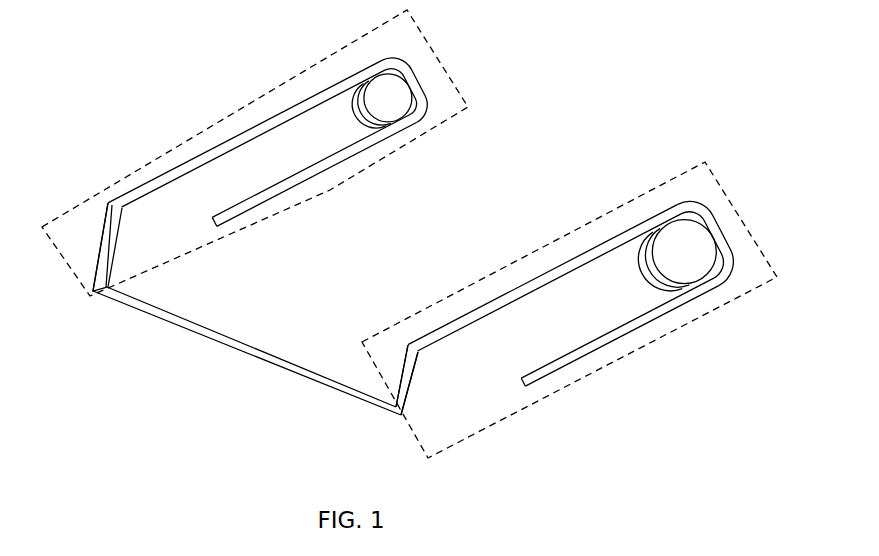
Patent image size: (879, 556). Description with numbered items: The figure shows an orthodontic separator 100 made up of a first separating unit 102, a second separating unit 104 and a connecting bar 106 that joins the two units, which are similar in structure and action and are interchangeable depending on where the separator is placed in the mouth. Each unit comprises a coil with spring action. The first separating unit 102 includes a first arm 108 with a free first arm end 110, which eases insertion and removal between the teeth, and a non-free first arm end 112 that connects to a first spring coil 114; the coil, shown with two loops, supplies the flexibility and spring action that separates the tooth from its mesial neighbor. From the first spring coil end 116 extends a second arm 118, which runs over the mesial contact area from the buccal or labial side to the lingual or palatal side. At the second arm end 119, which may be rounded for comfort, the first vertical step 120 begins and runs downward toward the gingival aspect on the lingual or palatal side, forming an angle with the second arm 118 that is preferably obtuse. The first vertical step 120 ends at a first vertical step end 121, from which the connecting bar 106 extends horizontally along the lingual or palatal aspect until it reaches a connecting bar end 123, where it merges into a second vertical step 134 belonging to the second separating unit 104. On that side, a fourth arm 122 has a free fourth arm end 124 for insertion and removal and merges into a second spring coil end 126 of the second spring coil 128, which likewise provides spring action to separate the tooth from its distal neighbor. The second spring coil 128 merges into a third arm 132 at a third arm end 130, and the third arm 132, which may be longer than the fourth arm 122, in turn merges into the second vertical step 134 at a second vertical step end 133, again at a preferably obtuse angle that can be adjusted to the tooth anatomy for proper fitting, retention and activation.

The orthodontic separator 100 is at (123, 424).
The first separating unit 102 is at (238, 110).
The second separating unit 104 is at (458, 292).
The connecting bar 106 is at (240, 360).
The first arm 108 is at (280, 184).
The free first arm end 110 is at (214, 223).
The non-free first arm end 112 is at (373, 131).
The first spring coil 114 is at (417, 75).
The first spring coil end 116 is at (355, 75).
The second arm 118 is at (290, 121).
The second arm end 119 is at (100, 199).
The first vertical step 120 is at (100, 249).
The first vertical step end 121 is at (92, 292).
The fourth arm 122 is at (538, 369).
The connecting bar end 123 is at (401, 414).
The free fourth arm end 124 is at (525, 389).
The second spring coil end 126 is at (667, 297).
The second spring coil 128 is at (708, 213).
The third arm end 130 is at (653, 217).
The third arm 132 is at (540, 289).
The second vertical step end 133 is at (408, 345).
The second vertical step 134 is at (408, 392).